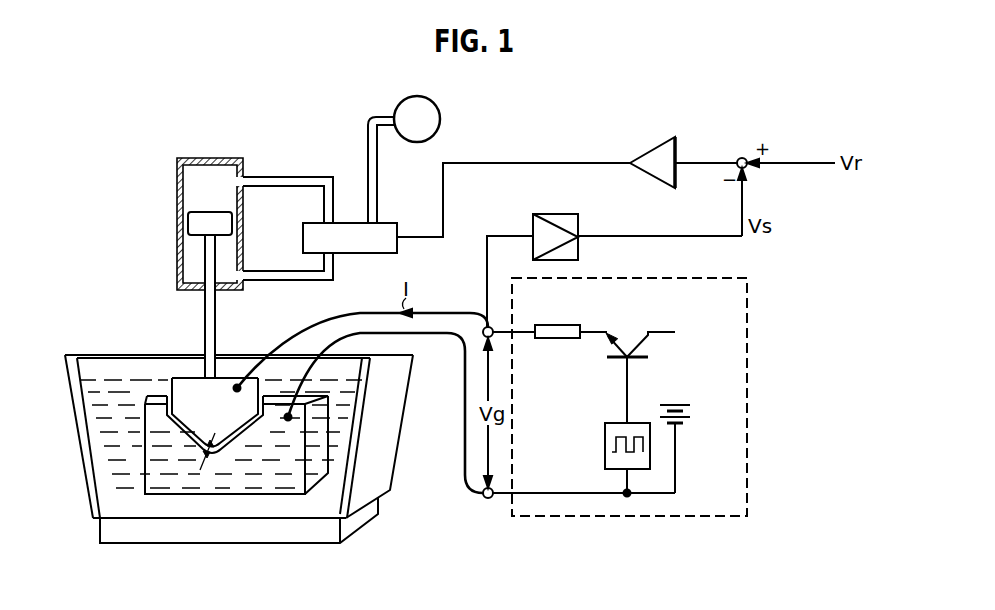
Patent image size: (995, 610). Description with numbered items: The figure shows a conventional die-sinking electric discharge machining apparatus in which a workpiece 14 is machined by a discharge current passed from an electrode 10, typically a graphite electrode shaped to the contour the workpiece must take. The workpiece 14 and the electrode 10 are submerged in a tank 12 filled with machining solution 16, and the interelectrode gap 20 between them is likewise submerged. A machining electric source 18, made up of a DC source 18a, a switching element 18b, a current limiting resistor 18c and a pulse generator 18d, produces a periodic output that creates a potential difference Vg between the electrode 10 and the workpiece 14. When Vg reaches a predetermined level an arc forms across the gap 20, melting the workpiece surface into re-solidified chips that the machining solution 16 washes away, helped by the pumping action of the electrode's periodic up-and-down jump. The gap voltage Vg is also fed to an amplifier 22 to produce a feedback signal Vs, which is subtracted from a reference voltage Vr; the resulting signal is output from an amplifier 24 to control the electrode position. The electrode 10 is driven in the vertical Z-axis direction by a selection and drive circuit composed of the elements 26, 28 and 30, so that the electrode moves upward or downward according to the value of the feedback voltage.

The electrode 10 is at (182, 385).
The tank 12 is at (76, 446).
The workpiece 14 is at (257, 495).
The machining solution 16 is at (105, 378).
The machining electric source 18 is at (748, 475).
The DC source 18a is at (684, 404).
The switching element 18b is at (628, 345).
The current limiting resistor 18c is at (554, 325).
The pulse generator 18d is at (605, 442).
The interelectrode gap 20 is at (215, 453).
The amplifier 22 is at (545, 214).
The amplifier 24 is at (658, 150).
The selection and drive circuit element 26 is at (368, 245).
The selection and drive circuit element 28 is at (440, 118).
The selection and drive circuit element 30 is at (209, 158).